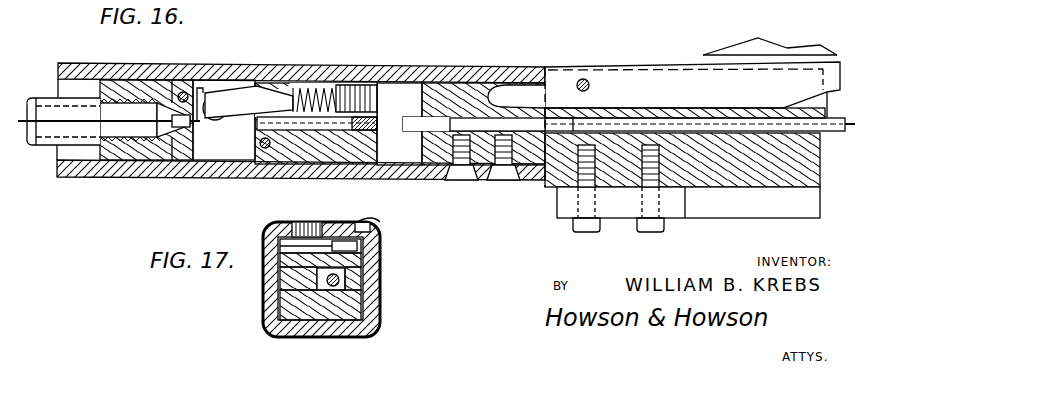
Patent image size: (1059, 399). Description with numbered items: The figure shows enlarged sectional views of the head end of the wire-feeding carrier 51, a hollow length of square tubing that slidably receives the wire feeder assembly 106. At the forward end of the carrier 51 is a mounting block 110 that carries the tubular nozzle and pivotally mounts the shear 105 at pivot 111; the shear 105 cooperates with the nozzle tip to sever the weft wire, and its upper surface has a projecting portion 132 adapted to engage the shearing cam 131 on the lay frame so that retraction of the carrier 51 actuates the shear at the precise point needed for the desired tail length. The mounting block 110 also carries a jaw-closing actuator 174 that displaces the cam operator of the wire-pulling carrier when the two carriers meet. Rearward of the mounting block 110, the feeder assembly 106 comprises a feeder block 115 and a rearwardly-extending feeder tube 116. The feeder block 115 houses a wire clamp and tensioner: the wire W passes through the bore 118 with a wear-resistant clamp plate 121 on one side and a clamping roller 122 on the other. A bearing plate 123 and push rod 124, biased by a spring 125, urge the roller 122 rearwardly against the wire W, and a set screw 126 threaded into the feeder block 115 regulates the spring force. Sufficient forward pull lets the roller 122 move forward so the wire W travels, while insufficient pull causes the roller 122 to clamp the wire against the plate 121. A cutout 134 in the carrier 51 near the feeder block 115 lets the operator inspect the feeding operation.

In FIG. 16, the wire-feeding carrier 51 is at (507, 70).
In FIG. 17, the wire-feeding carrier 51 is at (420, 337).
In FIG. 16, the shear 105 is at (637, 75).
In FIG. 16, the wire feeder assembly 106 is at (414, 160).
In FIG. 17, the wire feeder assembly 106 is at (292, 305).
In FIG. 16, the mounting block 110 is at (752, 178).
In FIG. 16, the shear pivot 111 is at (584, 78).
In FIG. 16, the feeder block 115 is at (305, 150).
In FIG. 16, the feeder tube 116 is at (49, 97).
In FIG. 16, the bore 118 is at (337, 124).
In FIG. 16, the clamp plate 121 is at (218, 148).
In FIG. 17, the clamp plate 121 is at (290, 278).
In FIG. 16, the clamping roller 122 is at (212, 100).
In FIG. 17, the clamping roller 122 is at (345, 290).
In FIG. 16, the bearing plate 123 is at (238, 92).
In FIG. 17, the bearing plate 123 is at (358, 276).
In FIG. 16, the push rod 124 is at (277, 102).
In FIG. 16, the spring 125 is at (316, 98).
In FIG. 16, the set screw 126 is at (398, 66).
In FIG. 16, the shearing cam 131 is at (748, 44).
In FIG. 16, the projecting portion 132 is at (771, 55).
In FIG. 17, the cutout 134 is at (360, 222).
In FIG. 16, the jaw-closing actuator 174 is at (765, 212).
In FIG. 16, the wire W is at (393, 126).
In FIG. 17, the wire W is at (322, 292).